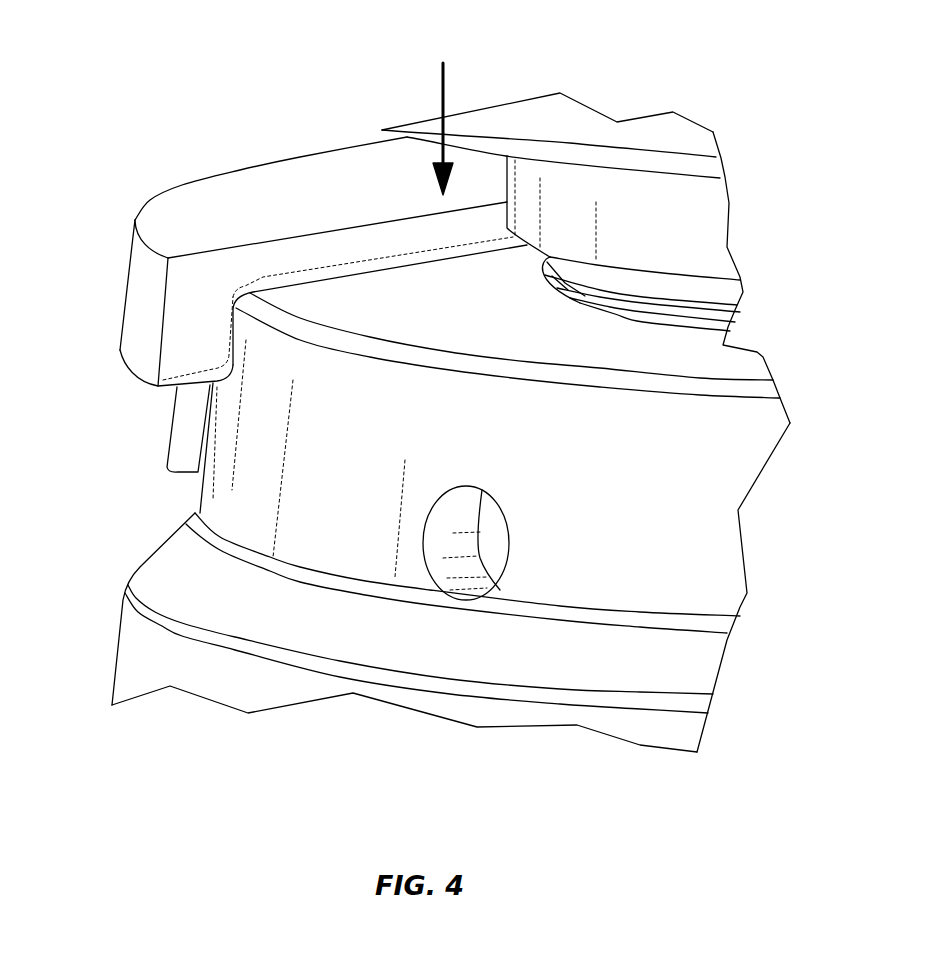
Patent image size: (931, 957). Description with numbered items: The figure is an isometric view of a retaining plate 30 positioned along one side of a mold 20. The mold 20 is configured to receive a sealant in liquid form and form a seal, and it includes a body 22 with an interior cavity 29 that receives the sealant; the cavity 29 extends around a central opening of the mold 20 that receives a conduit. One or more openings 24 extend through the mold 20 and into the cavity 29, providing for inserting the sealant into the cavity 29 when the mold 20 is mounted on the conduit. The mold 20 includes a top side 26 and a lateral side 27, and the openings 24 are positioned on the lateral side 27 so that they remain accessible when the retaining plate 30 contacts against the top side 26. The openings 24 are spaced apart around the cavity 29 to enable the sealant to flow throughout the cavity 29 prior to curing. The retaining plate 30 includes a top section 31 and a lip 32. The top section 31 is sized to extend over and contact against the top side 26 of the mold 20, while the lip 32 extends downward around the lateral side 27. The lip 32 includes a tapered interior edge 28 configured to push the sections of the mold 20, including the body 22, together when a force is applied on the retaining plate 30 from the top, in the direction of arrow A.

The mold 20 is at (530, 662).
The body 22 is at (133, 648).
The opening 24 is at (443, 545).
The top side 26 is at (695, 363).
The lateral side 27 is at (227, 435).
The tapered interior edge 28 is at (120, 355).
The interior cavity 29 is at (495, 542).
The retaining plate 30 is at (288, 250).
The top section 31 is at (293, 178).
The lip 32 is at (143, 297).
The arrow A is at (447, 80).